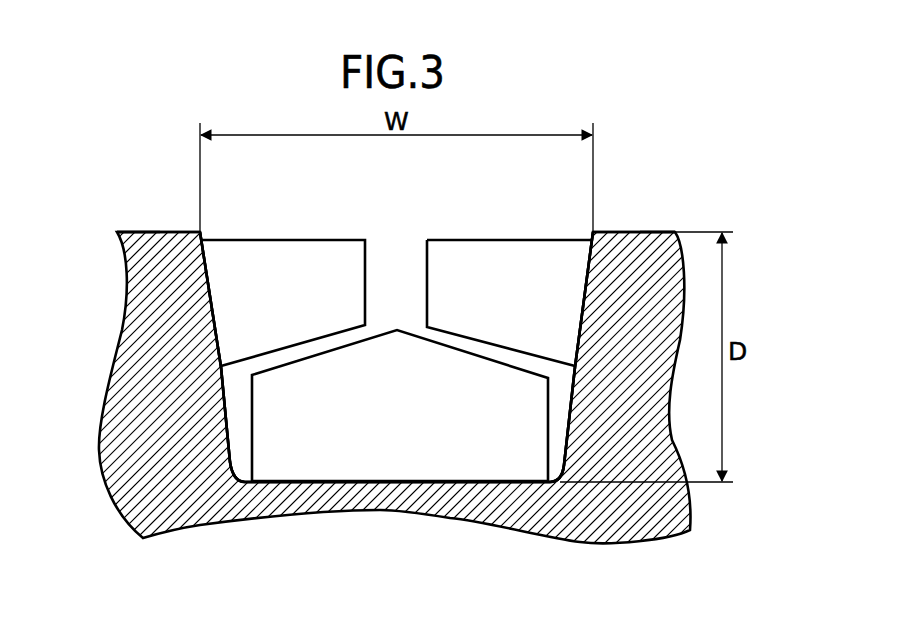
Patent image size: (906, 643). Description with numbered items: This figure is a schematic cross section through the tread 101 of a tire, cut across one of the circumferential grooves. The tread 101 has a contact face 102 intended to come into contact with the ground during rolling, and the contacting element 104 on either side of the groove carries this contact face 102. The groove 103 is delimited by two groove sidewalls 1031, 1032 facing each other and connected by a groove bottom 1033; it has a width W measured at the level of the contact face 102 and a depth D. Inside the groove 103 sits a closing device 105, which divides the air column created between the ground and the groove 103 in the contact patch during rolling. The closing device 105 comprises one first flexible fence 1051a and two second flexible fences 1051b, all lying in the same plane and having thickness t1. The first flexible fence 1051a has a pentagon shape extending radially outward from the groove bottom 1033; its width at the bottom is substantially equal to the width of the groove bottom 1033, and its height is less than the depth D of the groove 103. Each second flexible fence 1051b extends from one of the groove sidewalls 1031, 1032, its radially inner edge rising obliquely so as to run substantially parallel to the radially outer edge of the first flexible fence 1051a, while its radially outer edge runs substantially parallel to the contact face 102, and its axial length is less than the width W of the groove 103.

The tread 101 is at (629, 126).
The contact face 102 is at (161, 230).
The groove 103 is at (225, 233).
The contacting element 104 is at (137, 230).
The closing device 105 is at (396, 374).
The groove sidewall 1031 is at (236, 411).
The groove sidewall 1032 is at (563, 403).
The groove bottom 1033 is at (303, 472).
The first flexible fence 1051a is at (440, 463).
The second flexible fence 1051b is at (297, 262).